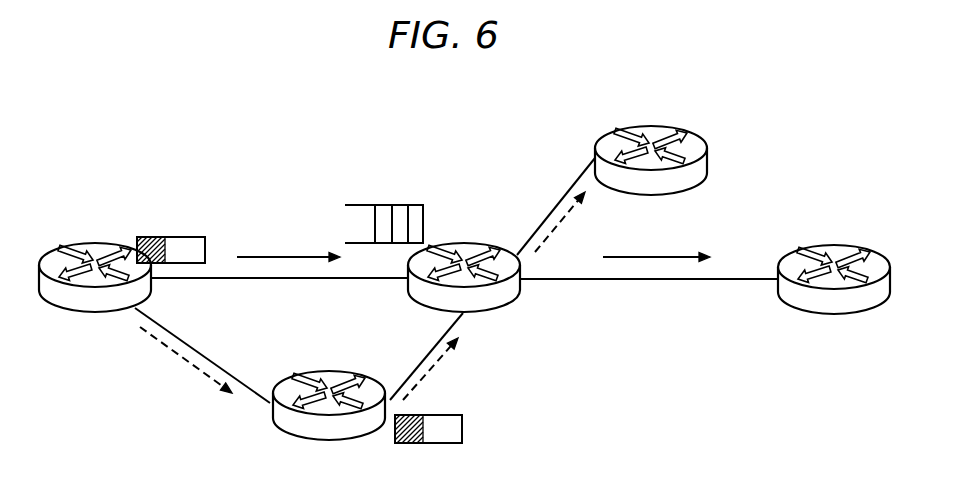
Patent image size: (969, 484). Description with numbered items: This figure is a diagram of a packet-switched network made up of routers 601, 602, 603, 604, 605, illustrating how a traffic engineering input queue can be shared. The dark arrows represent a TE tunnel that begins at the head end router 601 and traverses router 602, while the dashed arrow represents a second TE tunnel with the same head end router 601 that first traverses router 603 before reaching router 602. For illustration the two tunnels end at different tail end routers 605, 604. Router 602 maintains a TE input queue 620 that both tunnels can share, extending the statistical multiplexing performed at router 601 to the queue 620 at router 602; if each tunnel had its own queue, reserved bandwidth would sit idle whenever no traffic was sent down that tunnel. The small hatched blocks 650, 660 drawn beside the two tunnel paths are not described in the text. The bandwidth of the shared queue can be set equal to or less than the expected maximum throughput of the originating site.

The head end router 601 is at (98, 242).
The router 602 is at (463, 243).
The router 603 is at (330, 372).
The tail end router 604 is at (838, 245).
The tail end router 605 is at (655, 127).
The TE input queue 620 is at (403, 203).
The packet 650 is at (193, 237).
The packet 660 is at (463, 428).